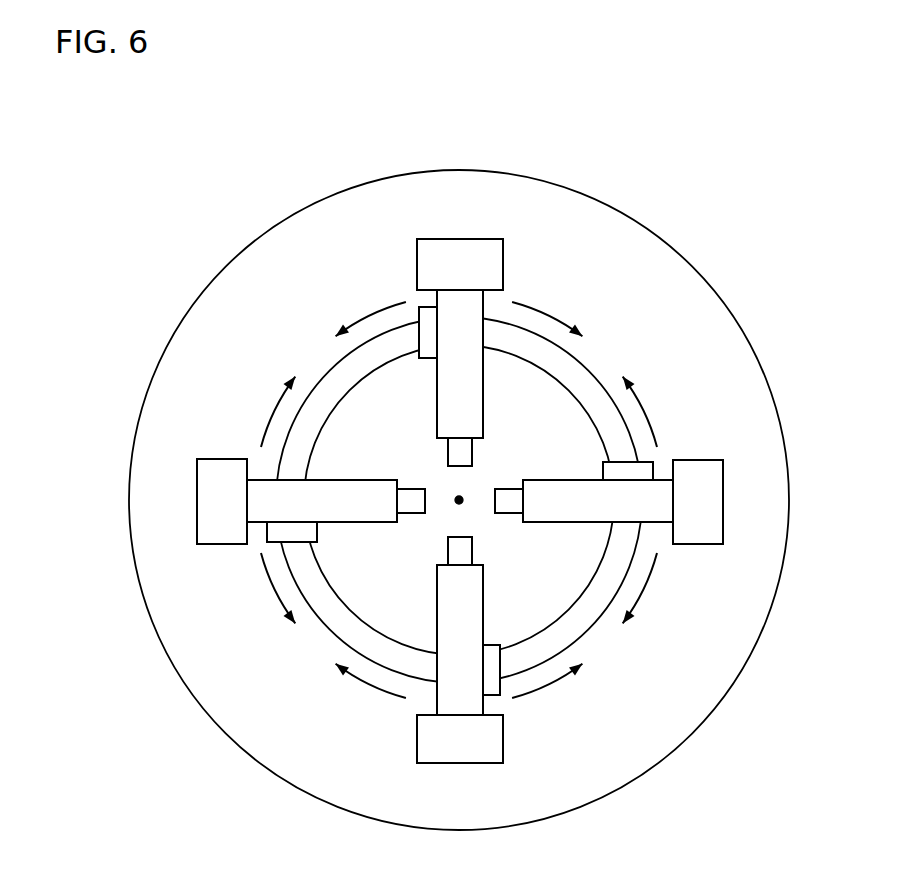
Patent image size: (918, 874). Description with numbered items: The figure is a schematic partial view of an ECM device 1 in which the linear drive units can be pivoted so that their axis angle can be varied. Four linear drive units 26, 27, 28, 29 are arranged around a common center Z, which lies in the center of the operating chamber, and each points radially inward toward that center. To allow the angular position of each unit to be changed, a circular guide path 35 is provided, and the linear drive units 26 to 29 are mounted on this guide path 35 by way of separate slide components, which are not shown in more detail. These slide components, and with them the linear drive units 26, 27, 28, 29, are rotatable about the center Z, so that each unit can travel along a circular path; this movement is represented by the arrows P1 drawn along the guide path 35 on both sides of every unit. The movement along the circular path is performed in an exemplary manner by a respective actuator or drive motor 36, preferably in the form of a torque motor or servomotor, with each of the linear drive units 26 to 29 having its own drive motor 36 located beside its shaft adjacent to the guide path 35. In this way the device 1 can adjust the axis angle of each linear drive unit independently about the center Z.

The device 1 is at (680, 211).
The linear drive unit 26 is at (490, 377).
The linear drive unit 27 is at (578, 532).
The linear drive unit 28 is at (420, 612).
The linear drive unit 29 is at (353, 464).
The circular guide path 35 is at (590, 391).
The actuator or drive motor 36 is at (428, 360).
The arrows P1 is at (652, 418).
The center Z is at (462, 497).